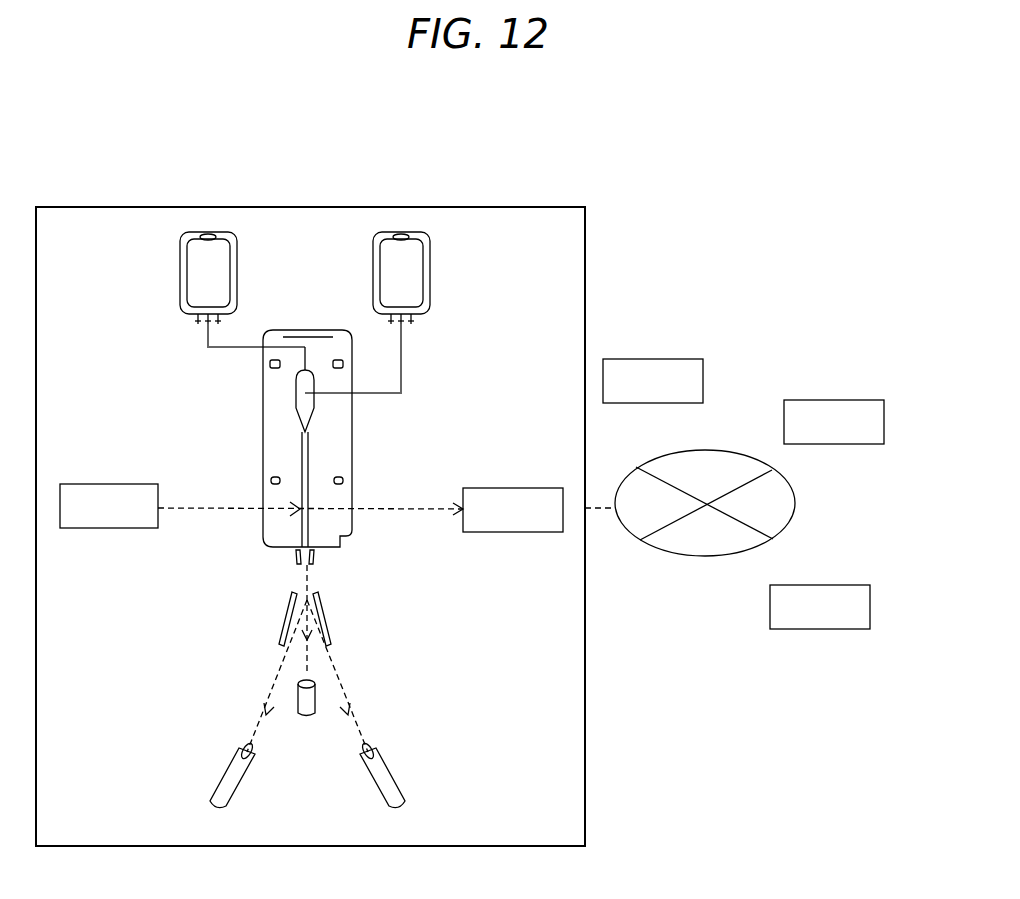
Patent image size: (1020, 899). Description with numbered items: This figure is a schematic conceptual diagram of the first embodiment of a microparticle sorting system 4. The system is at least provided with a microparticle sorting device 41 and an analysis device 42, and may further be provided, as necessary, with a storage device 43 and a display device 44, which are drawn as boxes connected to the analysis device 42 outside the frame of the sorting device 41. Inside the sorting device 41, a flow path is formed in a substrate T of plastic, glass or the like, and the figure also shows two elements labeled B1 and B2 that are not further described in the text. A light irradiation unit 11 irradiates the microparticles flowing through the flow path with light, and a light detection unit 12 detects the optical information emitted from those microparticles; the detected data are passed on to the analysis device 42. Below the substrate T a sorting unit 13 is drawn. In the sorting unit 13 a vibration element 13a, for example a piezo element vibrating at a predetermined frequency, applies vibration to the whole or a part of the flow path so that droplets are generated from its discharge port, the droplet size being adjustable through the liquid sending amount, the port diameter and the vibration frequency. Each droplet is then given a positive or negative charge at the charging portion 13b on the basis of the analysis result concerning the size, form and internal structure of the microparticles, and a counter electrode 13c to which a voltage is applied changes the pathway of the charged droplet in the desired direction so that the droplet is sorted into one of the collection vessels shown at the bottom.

The microparticle sorting system 4 is at (850, 192).
The microparticle sorting device 41 is at (584, 248).
The light irradiation unit 11 is at (109, 506).
The light detection unit 12 is at (513, 510).
The sorting unit 13 is at (323, 578).
The vibration element 13a is at (306, 546).
The charging portion 13b is at (296, 560).
The counter electrode 13c is at (282, 622).
The analysis device 42 is at (673, 451).
The storage device 43 is at (790, 481).
The display device 44 is at (780, 533).
The bag B1 is at (401, 278).
The bag B2 is at (208, 278).
The substrate T is at (305, 328).